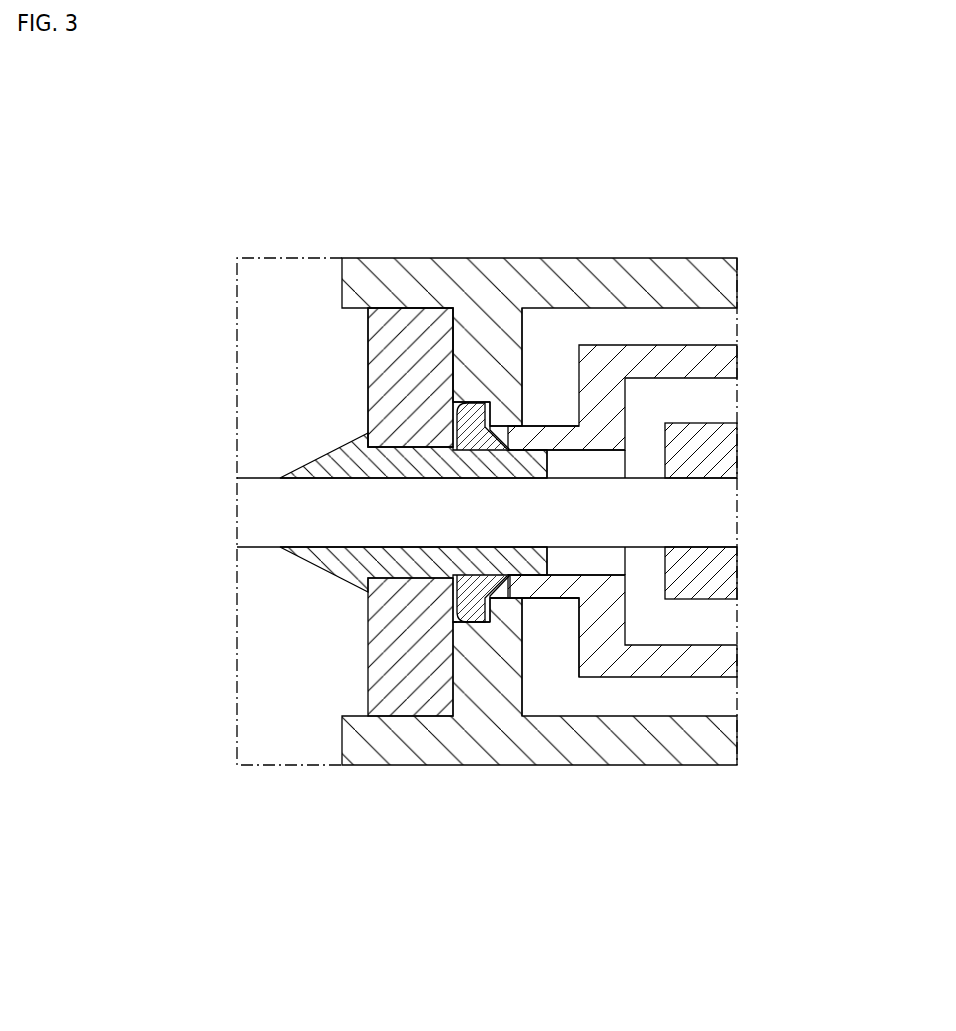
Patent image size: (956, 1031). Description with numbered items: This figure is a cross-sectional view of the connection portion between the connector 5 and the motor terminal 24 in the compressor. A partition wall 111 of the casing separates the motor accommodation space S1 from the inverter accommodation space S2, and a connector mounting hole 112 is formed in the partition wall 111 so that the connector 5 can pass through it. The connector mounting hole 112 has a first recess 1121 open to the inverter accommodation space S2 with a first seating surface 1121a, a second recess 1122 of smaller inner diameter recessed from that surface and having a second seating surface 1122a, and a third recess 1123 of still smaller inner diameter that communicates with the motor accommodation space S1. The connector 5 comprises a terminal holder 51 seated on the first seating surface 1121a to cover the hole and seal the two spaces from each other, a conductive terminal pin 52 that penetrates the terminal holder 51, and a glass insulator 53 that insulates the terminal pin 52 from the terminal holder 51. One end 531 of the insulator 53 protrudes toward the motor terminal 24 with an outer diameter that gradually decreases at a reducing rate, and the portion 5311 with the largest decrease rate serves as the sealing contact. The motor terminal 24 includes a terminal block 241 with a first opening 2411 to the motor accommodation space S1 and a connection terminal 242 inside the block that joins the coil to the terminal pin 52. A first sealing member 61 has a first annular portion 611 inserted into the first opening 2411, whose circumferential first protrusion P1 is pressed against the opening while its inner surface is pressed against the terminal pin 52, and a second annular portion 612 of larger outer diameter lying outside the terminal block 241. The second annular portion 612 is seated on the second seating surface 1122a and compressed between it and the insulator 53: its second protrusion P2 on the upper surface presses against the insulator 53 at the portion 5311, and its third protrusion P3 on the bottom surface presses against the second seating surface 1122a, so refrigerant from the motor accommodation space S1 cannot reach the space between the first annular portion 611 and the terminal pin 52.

The connector 5 is at (145, 393).
The terminal holder 51 is at (388, 387).
The terminal pin 52 is at (262, 513).
The insulator 53 is at (330, 575).
The one end of the insulator 531 is at (388, 462).
The portion having the largest decrease rate of the outer diameter 5311 is at (453, 433).
The motor terminal 24 is at (827, 367).
The terminal block 241 is at (707, 360).
The first opening 2411 is at (722, 447).
The connection terminal 242 is at (722, 577).
The partition wall 111 is at (349, 276).
The connector mounting hole 112 is at (393, 142).
The first recess 1121 is at (405, 318).
The first seating surface 1121a is at (462, 398).
The second recess 1122 is at (482, 420).
The second seating surface 1122a is at (512, 425).
The third recess 1123 is at (525, 400).
The first sealing member 61 is at (388, 858).
The first annular portion 611 is at (558, 590).
The second annular portion 612 is at (440, 680).
The first protrusion P1 is at (538, 620).
The second protrusion P2 is at (445, 628).
The third protrusion P3 is at (497, 605).
The motor accommodation space S1 is at (644, 322).
The inverter accommodation space S2 is at (266, 279).